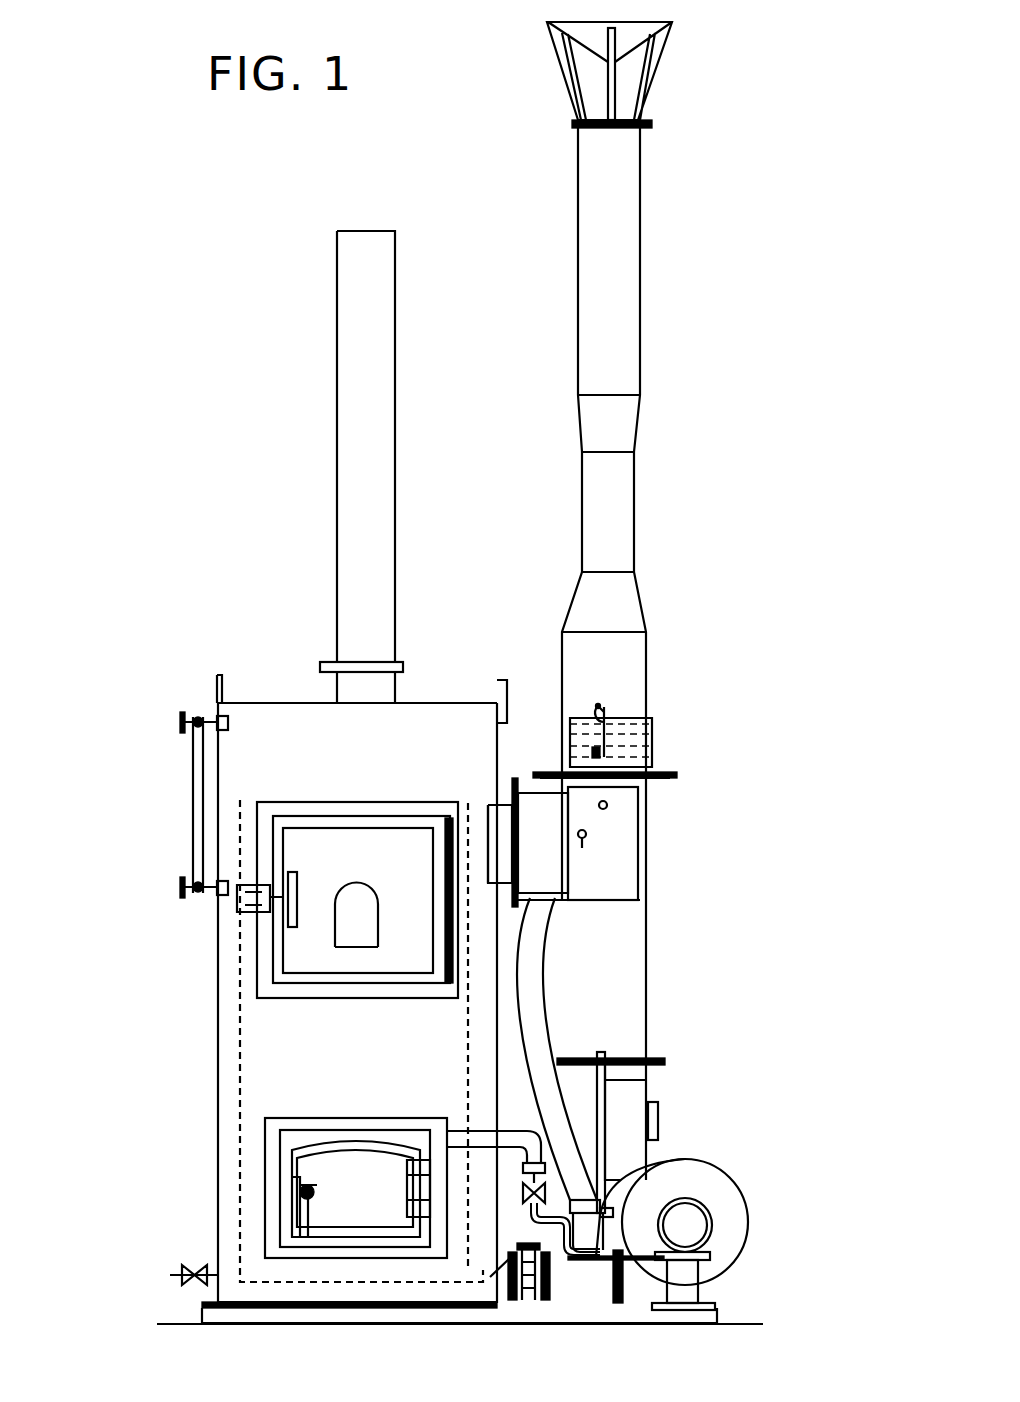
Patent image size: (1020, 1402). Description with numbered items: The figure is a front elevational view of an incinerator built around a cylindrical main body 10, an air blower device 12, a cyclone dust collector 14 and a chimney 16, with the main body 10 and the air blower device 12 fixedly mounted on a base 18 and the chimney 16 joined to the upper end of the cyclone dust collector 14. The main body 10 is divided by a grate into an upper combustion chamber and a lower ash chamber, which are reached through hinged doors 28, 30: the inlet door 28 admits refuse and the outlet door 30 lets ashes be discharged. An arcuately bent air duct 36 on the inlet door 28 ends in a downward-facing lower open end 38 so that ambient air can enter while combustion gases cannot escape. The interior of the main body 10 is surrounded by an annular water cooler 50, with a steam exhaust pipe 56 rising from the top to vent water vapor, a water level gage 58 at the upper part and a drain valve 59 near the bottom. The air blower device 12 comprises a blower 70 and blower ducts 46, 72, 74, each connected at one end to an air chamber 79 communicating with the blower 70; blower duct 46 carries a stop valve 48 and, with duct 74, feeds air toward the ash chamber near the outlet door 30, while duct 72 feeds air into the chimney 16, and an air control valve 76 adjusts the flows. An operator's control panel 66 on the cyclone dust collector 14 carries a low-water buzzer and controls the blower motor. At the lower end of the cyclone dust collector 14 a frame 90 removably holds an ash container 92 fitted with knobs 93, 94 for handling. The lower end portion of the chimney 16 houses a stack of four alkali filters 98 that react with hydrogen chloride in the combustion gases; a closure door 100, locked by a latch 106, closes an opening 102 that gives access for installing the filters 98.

The main body 10 is at (158, 905).
The air blower device 12 is at (760, 1215).
The cyclone dust collector 14 is at (665, 905).
The chimney 16 is at (630, 367).
The base 18 is at (202, 1314).
The inlet door 28 is at (298, 847).
The outlet door 30 is at (320, 1213).
The air duct 36 is at (345, 928).
The lower open end 38 is at (357, 947).
The blower duct 46 is at (485, 1130).
The stop valve 48 is at (523, 1183).
The water cooler 50 is at (240, 1040).
The steam exhaust pipe 56 is at (388, 387).
The water level gage 58 is at (193, 750).
The drain valve 59 is at (188, 1262).
The operator's control panel 66 is at (627, 832).
The blower 70 is at (700, 1173).
The blower duct 72 is at (532, 980).
The blower duct 74 is at (503, 1283).
The air control valve 76 is at (533, 1275).
The air chamber 79 is at (587, 1237).
The frame 90 is at (653, 1068).
The ash container 92 is at (640, 1088).
The knob 93 is at (660, 1118).
The knob 94 is at (547, 1130).
The alkali filters 98 is at (653, 732).
The closure door 100 is at (652, 753).
The opening 102 is at (640, 712).
The latch 106 is at (597, 705).